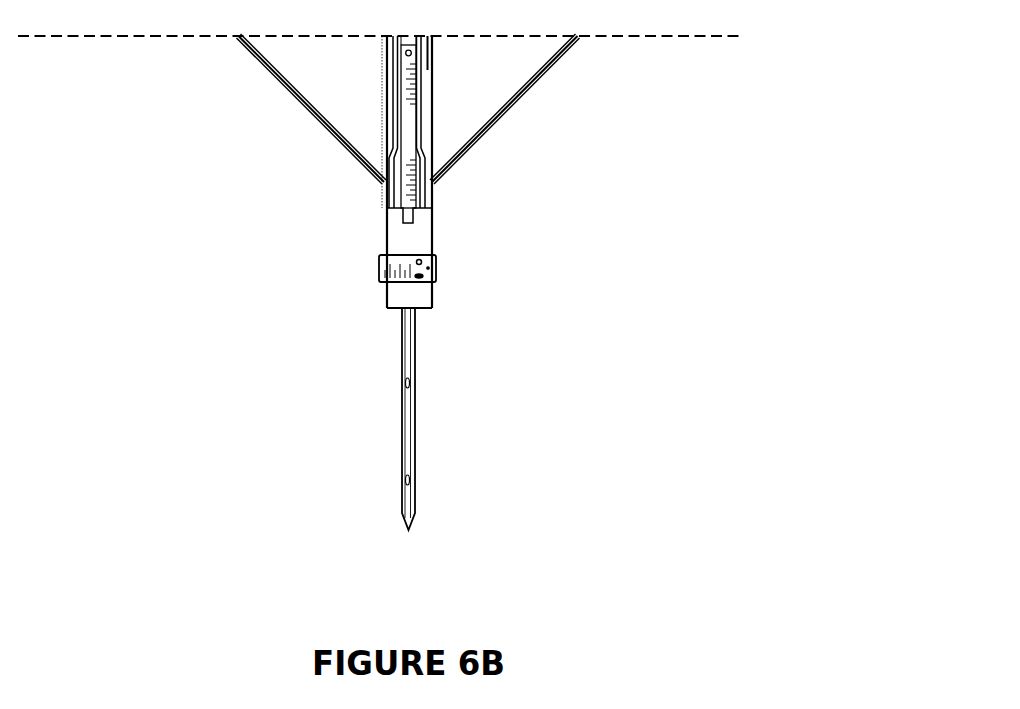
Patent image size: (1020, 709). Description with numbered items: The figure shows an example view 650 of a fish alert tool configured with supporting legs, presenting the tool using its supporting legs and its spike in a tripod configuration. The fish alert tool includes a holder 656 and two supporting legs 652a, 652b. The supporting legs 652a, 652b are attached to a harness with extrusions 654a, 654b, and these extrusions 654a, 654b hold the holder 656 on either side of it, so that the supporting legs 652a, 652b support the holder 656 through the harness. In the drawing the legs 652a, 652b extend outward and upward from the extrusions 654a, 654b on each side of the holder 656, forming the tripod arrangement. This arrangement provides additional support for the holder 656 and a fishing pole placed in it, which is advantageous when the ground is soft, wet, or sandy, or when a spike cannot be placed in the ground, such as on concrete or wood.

The example view 650 is at (853, 74).
The supporting leg 652a is at (302, 110).
The supporting leg 652b is at (508, 110).
The harness extrusion 654a is at (382, 190).
The harness extrusion 654b is at (432, 192).
The holder 656 is at (420, 313).